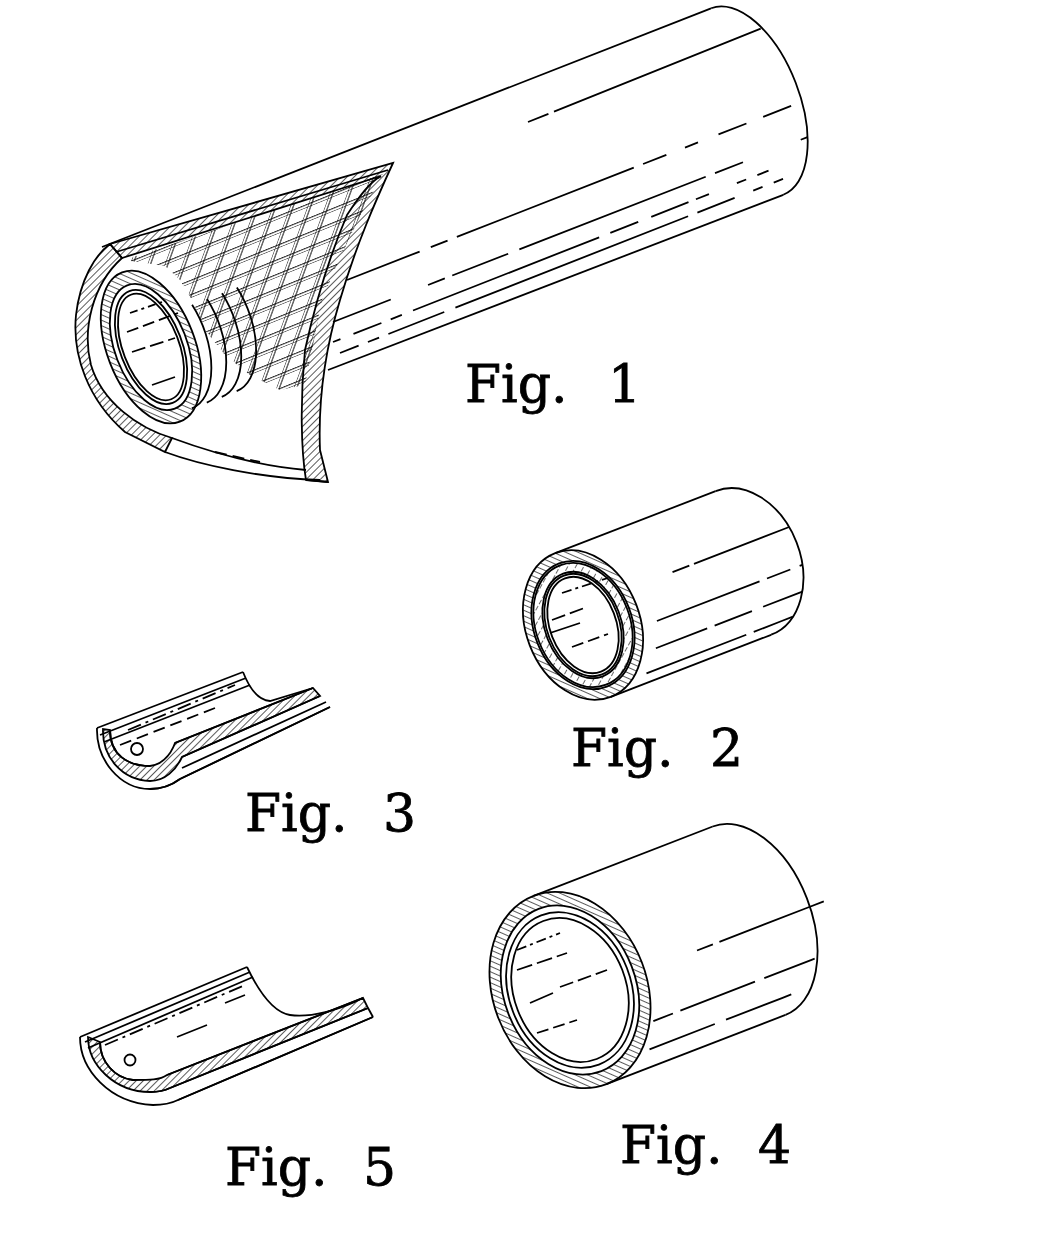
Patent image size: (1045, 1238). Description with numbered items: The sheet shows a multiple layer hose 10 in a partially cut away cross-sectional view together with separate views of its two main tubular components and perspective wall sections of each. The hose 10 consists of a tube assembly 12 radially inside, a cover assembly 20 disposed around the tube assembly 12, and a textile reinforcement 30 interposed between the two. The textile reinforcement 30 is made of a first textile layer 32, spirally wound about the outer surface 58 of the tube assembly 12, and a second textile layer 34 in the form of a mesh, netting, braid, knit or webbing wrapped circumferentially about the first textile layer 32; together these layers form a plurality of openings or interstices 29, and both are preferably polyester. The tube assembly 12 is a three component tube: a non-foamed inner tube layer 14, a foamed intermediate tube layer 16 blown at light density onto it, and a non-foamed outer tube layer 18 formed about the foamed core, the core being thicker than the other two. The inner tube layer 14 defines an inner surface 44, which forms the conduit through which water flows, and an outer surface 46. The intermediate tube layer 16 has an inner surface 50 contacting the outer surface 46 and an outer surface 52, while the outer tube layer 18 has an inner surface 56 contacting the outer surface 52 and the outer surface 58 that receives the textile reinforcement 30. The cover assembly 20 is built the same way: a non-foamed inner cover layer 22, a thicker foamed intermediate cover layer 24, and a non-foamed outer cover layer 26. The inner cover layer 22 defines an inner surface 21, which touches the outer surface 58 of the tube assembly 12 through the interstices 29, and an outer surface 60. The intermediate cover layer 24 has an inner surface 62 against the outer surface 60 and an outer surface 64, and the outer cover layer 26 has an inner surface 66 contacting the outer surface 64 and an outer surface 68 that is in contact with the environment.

In FIG. 1, the hose 10 is at (285, 95).
In FIG. 1, the tube assembly 12 is at (167, 415).
In FIG. 2, the tube assembly 12 is at (738, 466).
In FIG. 3, the tube assembly 12 is at (105, 680).
In FIG. 2, the non-foamed inner tube layer 14 is at (545, 670).
In FIG. 3, the non-foamed inner tube layer 14 is at (308, 678).
In FIG. 2, the foamed intermediate tube layer 16 is at (530, 578).
In FIG. 3, the foamed intermediate tube layer 16 is at (95, 718).
In FIG. 2, the non-foamed outer tube layer 18 is at (596, 550).
In FIG. 3, the non-foamed outer tube layer 18 is at (333, 715).
In FIG. 1, the cover assembly 20 is at (456, 100).
In FIG. 5, the cover assembly 20 is at (100, 985).
In FIG. 4, the cover assembly 20 is at (567, 868).
In FIG. 1, the inner surface 21 is at (280, 480).
In FIG. 5, the inner surface 21 is at (135, 1030).
In FIG. 4, the inner surface 21 is at (591, 1034).
In FIG. 1, the non-foamed inner cover layer 22 is at (315, 485).
In FIG. 5, the non-foamed inner cover layer 22 is at (357, 990).
In FIG. 4, the non-foamed inner cover layer 22 is at (535, 1060).
In FIG. 1, the foamed intermediate cover layer 24 is at (325, 480).
In FIG. 5, the foamed intermediate cover layer 24 is at (87, 1020).
In FIG. 4, the foamed intermediate cover layer 24 is at (495, 940).
In FIG. 1, the non-foamed outer cover layer 26 is at (328, 437).
In FIG. 5, the non-foamed outer cover layer 26 is at (390, 1018).
In FIG. 4, the non-foamed outer cover layer 26 is at (520, 908).
In FIG. 1, the interstices 29 is at (225, 245).
In FIG. 1, the textile reinforcement 30 is at (250, 385).
In FIG. 1, the first textile layer 32 is at (207, 405).
In FIG. 1, the second textile layer 34 is at (250, 372).
In FIG. 1, the inner surface 44 is at (177, 372).
In FIG. 2, the inner surface 44 is at (606, 660).
In FIG. 3, the inner surface 44 is at (143, 730).
In FIG. 3, the outer surface 46 is at (187, 740).
In FIG. 3, the inner surface 50 is at (127, 762).
In FIG. 3, the outer surface 52 is at (160, 790).
In FIG. 3, the inner surface 56 is at (327, 698).
In FIG. 1, the outer surface 58 is at (350, 232).
In FIG. 2, the outer surface 58 is at (704, 549).
In FIG. 3, the outer surface 58 is at (300, 730).
In FIG. 5, the outer surface 60 is at (207, 1058).
In FIG. 5, the inner surface 62 is at (117, 1073).
In FIG. 5, the outer surface 64 is at (175, 1105).
In FIG. 5, the inner surface 66 is at (353, 1003).
In FIG. 1, the outer surface 68 is at (546, 168).
In FIG. 5, the outer surface 68 is at (347, 1030).
In FIG. 4, the outer surface 68 is at (703, 901).